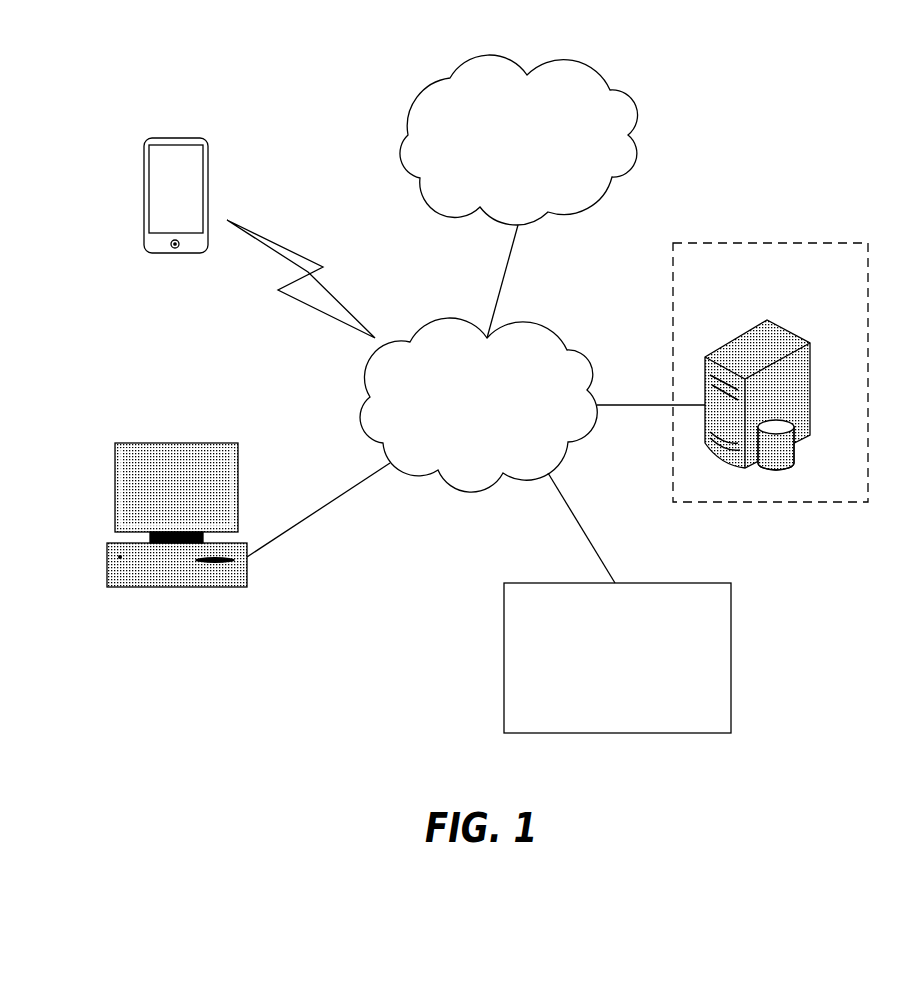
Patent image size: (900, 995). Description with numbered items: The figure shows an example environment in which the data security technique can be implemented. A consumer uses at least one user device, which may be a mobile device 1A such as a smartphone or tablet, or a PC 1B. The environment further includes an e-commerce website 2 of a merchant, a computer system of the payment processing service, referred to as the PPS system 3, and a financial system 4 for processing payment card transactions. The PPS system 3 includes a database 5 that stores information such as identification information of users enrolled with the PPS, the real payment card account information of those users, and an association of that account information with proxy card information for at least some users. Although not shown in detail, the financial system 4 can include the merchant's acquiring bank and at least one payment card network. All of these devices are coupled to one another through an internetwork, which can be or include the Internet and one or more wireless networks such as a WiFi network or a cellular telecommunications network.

The mobile device 1A is at (142, 243).
The PC 1B is at (107, 565).
The e-commerce website 2 is at (719, 617).
The PPS system 3 is at (854, 276).
The financial system 4 is at (527, 206).
The database 5 is at (796, 448).